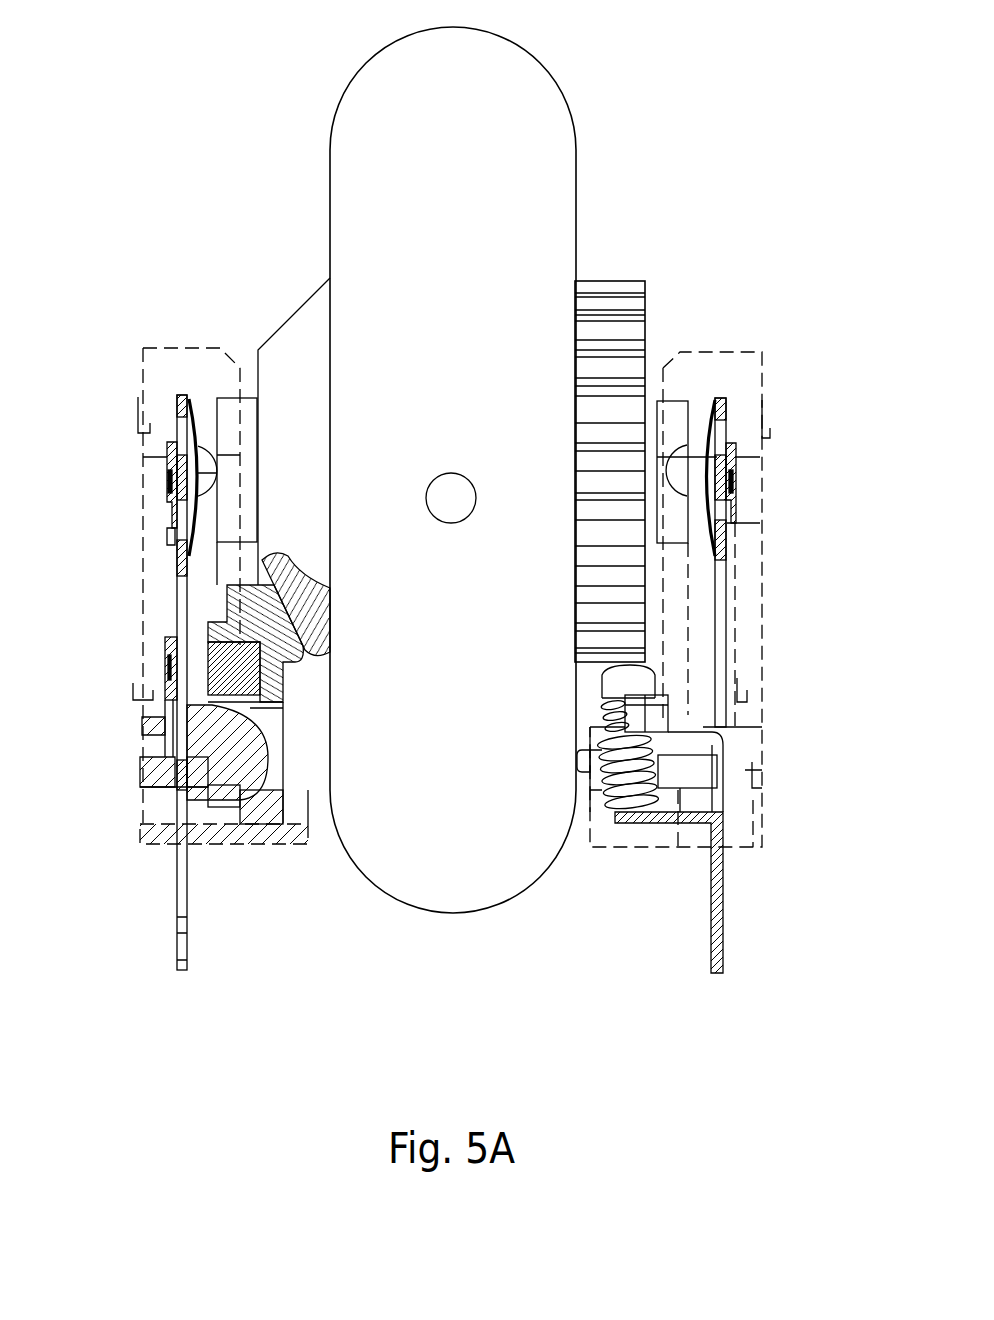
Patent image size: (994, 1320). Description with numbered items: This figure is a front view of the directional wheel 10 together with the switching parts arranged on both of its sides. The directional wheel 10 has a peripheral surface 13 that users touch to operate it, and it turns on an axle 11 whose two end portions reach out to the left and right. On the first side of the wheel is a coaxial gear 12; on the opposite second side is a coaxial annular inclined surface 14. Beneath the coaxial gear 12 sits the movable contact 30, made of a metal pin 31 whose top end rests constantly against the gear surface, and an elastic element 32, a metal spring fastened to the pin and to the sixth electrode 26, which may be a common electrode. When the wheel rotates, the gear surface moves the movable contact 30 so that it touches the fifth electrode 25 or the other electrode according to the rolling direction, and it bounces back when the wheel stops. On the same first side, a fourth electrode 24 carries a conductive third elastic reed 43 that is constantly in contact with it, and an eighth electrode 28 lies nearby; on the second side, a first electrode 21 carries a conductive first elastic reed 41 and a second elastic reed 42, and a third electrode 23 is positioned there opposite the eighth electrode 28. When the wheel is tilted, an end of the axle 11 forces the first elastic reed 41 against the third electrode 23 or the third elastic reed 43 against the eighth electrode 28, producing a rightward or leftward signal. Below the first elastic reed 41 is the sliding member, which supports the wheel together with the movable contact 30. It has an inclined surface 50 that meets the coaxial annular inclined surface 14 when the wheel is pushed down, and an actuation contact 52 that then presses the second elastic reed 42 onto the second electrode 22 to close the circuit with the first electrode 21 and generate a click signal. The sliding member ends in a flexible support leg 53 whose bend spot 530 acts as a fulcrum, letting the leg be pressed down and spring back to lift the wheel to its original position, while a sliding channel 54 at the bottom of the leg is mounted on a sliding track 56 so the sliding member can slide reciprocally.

The directional wheel 10 is at (562, 76).
The axle 11 is at (653, 413).
The coaxial gear 12 is at (613, 280).
The peripheral surface 13 is at (468, 162).
The coaxial annular inclined surface 14 is at (292, 337).
The first electrode 21 is at (178, 408).
The second electrode 22 is at (176, 645).
The third electrode 23 is at (166, 508).
The fourth electrode 24 is at (727, 412).
The fifth electrode 25 is at (720, 777).
The sixth electrode 26 is at (724, 940).
The eighth electrode 28 is at (737, 508).
The movable contact 30 is at (666, 752).
The metal pin 31 is at (642, 668).
The elastic element 32 is at (610, 807).
The first elastic reed 41 is at (177, 432).
The second elastic reed 42 is at (190, 640).
The third elastic reed 43 is at (727, 428).
The inclined surface 50 is at (255, 578).
The actuation contact 52 is at (215, 668).
The support leg 53 is at (272, 745).
The sliding channel 54 is at (260, 819).
The sliding track 56 is at (227, 819).
The bend spot 530 is at (212, 704).